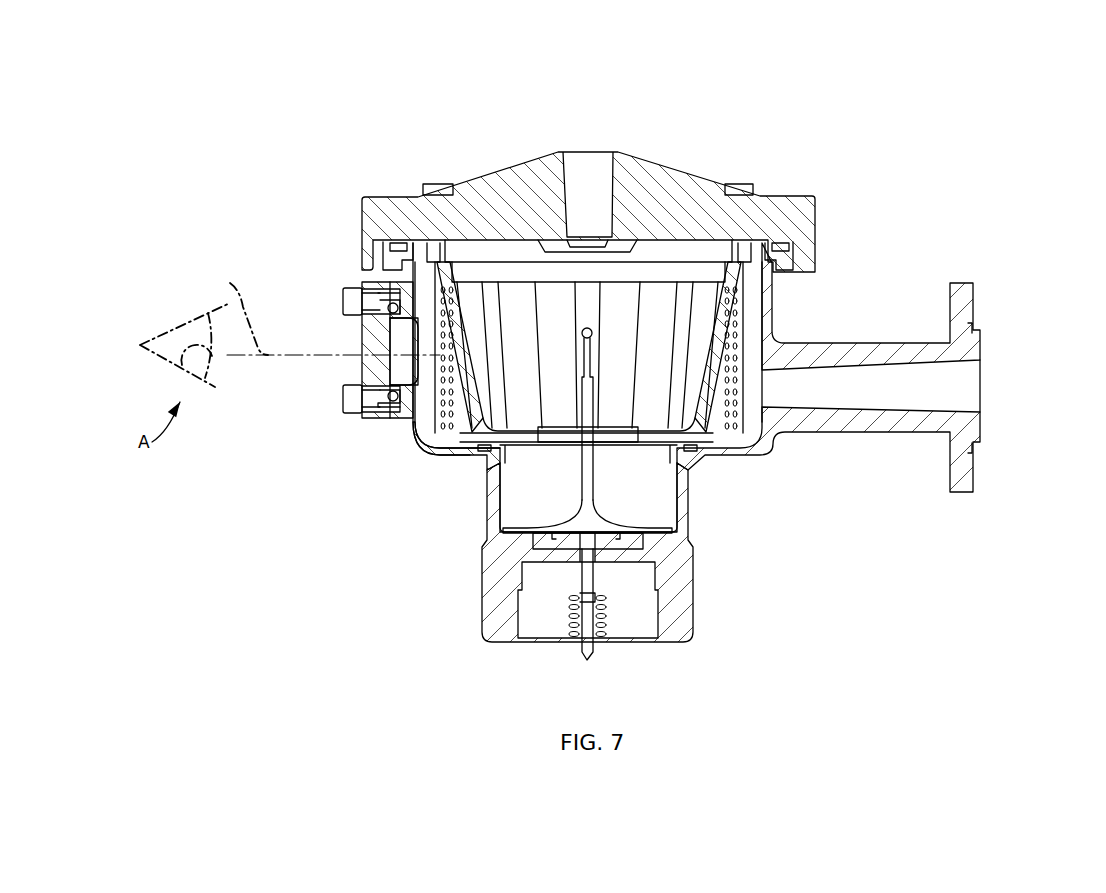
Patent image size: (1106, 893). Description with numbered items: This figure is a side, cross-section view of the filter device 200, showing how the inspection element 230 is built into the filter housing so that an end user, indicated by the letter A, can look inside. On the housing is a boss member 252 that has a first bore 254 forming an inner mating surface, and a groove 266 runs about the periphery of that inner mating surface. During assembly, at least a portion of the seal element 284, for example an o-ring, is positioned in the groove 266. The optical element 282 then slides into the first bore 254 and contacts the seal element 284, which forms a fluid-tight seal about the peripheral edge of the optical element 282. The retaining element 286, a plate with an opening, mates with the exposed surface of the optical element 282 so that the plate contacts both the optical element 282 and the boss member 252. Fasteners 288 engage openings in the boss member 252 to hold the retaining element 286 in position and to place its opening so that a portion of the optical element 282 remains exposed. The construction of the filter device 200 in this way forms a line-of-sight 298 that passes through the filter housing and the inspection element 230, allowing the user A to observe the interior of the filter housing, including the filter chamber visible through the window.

The filter device 200 is at (965, 125).
The inspection element 230 is at (278, 258).
The boss member 252 is at (374, 431).
The first bore 254 is at (373, 398).
The groove 266 is at (400, 296).
The optical element 282 is at (375, 340).
The seal element 284 is at (375, 296).
The retaining element 286 is at (362, 415).
The fasteners 288 is at (343, 297).
The line-of-sight 298 is at (235, 315).